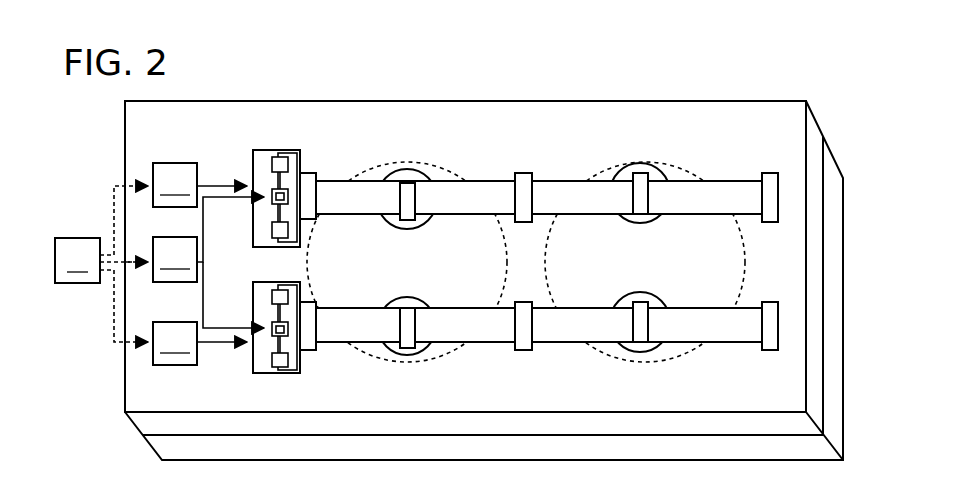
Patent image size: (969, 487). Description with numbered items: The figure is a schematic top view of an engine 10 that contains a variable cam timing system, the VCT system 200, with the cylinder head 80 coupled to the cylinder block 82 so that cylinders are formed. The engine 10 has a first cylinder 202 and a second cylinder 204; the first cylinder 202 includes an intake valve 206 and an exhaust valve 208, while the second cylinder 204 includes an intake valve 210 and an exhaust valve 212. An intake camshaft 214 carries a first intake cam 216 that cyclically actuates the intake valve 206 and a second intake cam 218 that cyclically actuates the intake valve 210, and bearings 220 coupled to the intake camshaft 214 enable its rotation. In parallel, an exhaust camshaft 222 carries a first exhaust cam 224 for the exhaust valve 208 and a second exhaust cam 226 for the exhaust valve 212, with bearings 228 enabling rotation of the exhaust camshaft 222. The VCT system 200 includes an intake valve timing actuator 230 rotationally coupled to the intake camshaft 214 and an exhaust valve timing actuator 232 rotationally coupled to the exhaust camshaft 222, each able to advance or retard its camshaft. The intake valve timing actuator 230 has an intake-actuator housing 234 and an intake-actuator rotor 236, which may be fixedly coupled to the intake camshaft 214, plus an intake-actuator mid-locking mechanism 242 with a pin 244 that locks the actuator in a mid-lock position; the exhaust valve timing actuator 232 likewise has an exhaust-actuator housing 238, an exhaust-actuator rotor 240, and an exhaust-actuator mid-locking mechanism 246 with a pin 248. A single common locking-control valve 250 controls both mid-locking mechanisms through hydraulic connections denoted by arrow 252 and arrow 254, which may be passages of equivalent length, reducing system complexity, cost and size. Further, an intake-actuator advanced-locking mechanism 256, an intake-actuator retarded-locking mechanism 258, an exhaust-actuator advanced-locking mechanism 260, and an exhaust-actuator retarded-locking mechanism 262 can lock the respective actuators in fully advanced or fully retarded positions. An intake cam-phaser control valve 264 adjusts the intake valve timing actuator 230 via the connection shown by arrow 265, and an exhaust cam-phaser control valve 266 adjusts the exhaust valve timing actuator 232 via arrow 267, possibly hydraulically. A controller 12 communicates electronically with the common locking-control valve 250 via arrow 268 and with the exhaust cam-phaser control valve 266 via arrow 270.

The engine 10 is at (457, 58).
The controller 12 is at (77, 260).
The cylinder head 80 is at (818, 126).
The cylinder block 82 is at (838, 160).
The VCT system 200 is at (182, 127).
The first cylinder 202 is at (406, 162).
The second cylinder 204 is at (642, 163).
The intake valve 206 is at (409, 229).
The exhaust valve 208 is at (406, 296).
The intake valve 210 is at (644, 223).
The exhaust valve 212 is at (642, 292).
The intake camshaft 214 is at (482, 181).
The first intake cam 216 is at (418, 199).
The second intake cam 218 is at (649, 196).
The bearings 220 is at (318, 197).
The exhaust camshaft 222 is at (490, 343).
The first exhaust cam 224 is at (418, 325).
The second exhaust cam 226 is at (649, 325).
The bearings 228 is at (318, 323).
The intake valve timing actuator 230 is at (303, 148).
The exhaust valve timing actuator 232 is at (303, 378).
The intake-actuator housing 234 is at (253, 150).
The intake-actuator rotor 236 is at (300, 160).
The exhaust-actuator housing 238 is at (253, 373).
The exhaust-actuator rotor 240 is at (300, 355).
The intake-actuator mid-locking mechanism 242 is at (277, 202).
The pin 244 is at (273, 199).
The exhaust-actuator mid-locking mechanism 246 is at (273, 325).
The pin 248 is at (276, 329).
The common locking-control valve 250 is at (175, 259).
The arrow 252 is at (203, 217).
The arrow 254 is at (203, 297).
The intake-actuator advanced-locking mechanism 256 is at (272, 234).
The intake-actuator retarded-locking mechanism 258 is at (272, 165).
The exhaust-actuator advanced-locking mechanism 260 is at (272, 360).
The exhaust-actuator retarded-locking mechanism 262 is at (273, 293).
The intake cam-phaser control valve 264 is at (175, 185).
The arrow 265 is at (209, 183).
The exhaust cam-phaser control valve 266 is at (175, 343).
The arrow 267 is at (209, 345).
The arrow 268 is at (131, 266).
The arrow 270 is at (113, 199).